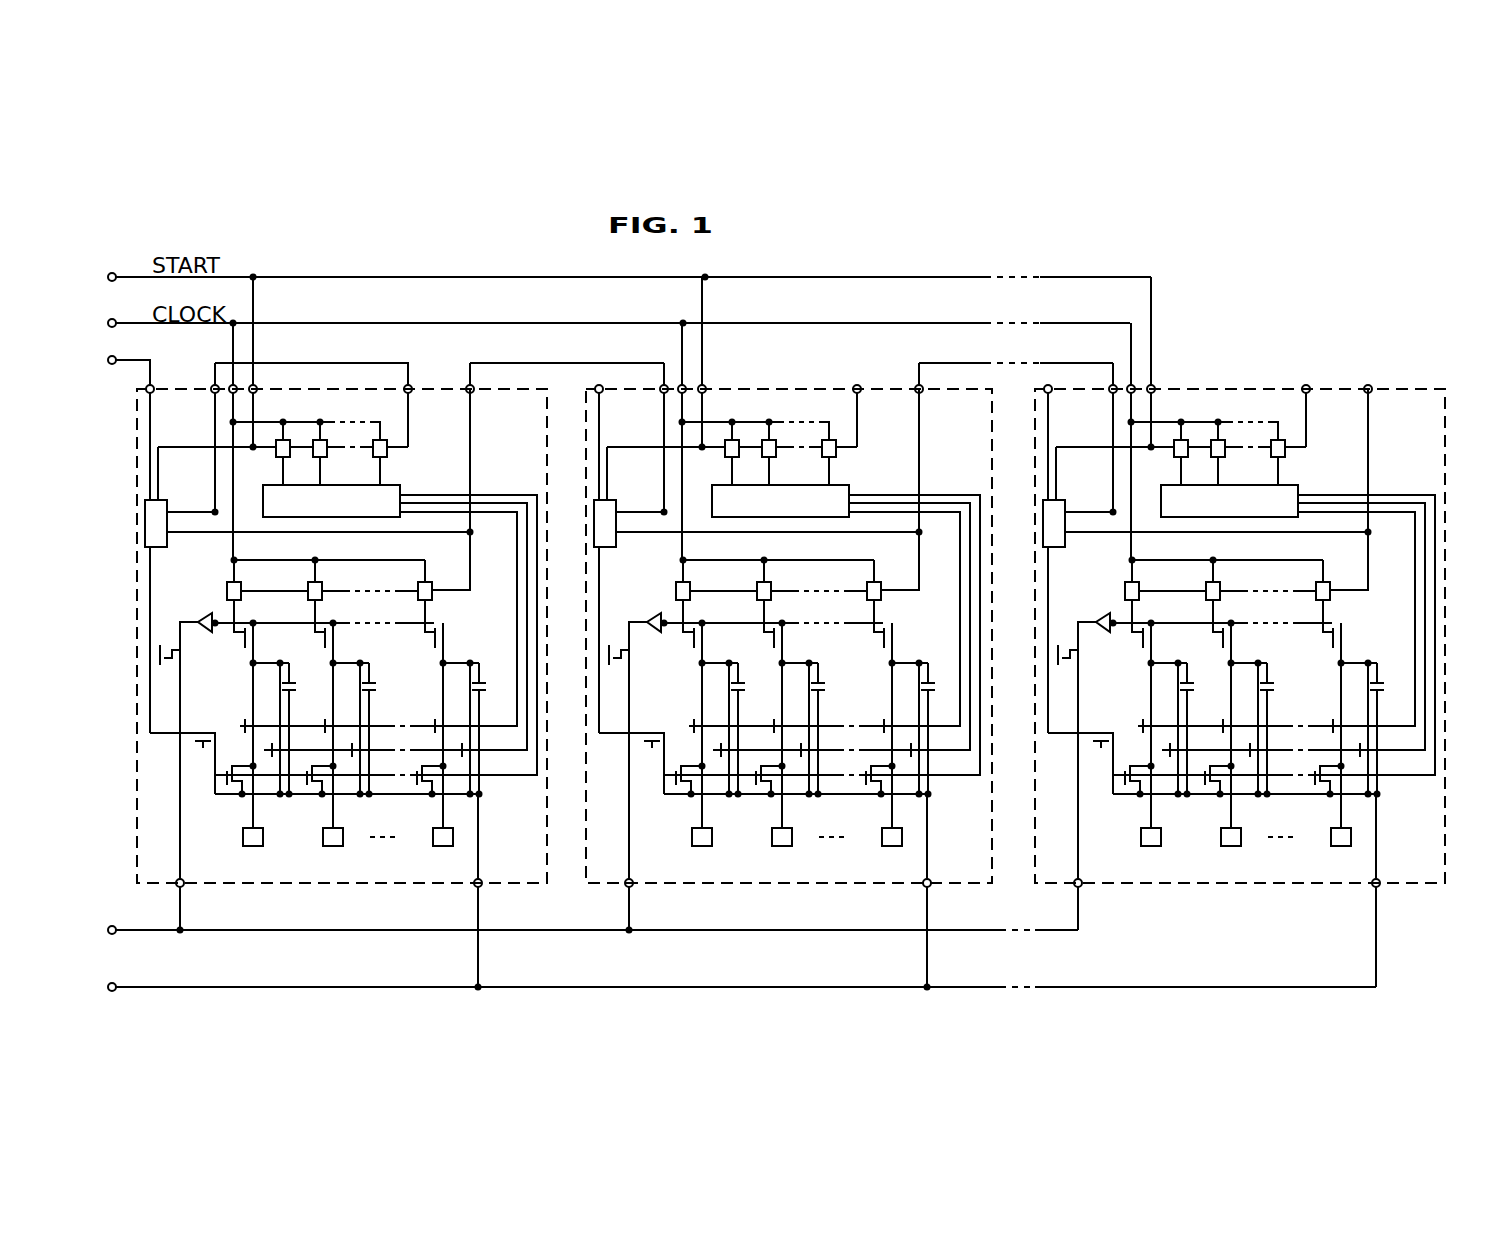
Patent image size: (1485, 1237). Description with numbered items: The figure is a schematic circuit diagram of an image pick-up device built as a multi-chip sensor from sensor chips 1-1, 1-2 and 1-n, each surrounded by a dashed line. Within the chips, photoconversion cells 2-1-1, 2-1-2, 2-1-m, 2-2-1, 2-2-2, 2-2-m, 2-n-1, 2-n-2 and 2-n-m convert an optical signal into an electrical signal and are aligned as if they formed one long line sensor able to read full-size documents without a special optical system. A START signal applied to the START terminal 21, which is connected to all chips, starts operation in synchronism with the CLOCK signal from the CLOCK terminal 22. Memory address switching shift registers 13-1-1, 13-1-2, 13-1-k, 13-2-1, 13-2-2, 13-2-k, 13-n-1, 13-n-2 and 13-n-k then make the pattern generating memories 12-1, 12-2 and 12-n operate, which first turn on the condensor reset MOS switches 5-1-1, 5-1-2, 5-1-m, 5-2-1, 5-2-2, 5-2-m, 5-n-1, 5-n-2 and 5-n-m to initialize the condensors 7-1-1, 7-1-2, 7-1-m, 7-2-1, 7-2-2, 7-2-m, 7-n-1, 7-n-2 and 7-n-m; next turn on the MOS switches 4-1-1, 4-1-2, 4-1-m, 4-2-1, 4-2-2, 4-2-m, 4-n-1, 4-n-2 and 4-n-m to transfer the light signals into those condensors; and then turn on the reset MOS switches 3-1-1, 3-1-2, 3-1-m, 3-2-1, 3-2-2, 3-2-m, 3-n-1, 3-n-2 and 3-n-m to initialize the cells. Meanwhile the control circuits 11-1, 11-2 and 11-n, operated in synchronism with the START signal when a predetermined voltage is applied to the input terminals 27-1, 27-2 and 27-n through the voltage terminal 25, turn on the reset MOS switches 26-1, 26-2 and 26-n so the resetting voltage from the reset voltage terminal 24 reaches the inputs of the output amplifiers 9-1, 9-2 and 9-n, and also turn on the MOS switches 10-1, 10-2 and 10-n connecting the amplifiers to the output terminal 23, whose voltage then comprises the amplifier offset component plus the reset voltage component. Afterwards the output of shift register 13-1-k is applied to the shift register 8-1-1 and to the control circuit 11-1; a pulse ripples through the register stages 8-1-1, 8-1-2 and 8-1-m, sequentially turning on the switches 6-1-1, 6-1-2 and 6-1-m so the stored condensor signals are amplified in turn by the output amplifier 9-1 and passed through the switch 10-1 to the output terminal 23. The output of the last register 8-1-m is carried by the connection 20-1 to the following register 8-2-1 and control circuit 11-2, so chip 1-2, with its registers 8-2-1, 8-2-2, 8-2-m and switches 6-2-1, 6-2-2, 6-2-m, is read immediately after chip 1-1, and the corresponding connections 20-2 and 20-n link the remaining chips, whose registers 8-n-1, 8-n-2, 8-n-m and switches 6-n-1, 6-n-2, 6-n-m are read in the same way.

The sensor chip 1-1 is at (296, 883).
The sensor chip 1-2 is at (789, 656).
The sensor chip 1-n is at (1240, 656).
The photoconversion cell 2-1-1 is at (253, 846).
The photoconversion cell 2-1-2 is at (333, 846).
The photoconversion cell 2-1-m is at (443, 846).
The photoconversion cell 2-2-1 is at (693, 824).
The photoconversion cell 2-2-2 is at (790, 824).
The photoconversion cell 2-2-m is at (886, 824).
The photoconversion cell 2-n-1 is at (1142, 824).
The photoconversion cell 2-n-2 is at (1239, 824).
The photoconversion cell 2-n-m is at (1335, 824).
The reset MOS switch 3-1-1 is at (234, 788).
The reset MOS switch 3-1-2 is at (318, 788).
The reset MOS switch 3-1-m is at (428, 788).
The reset MOS switch 3-2-1 is at (668, 793).
The reset MOS switch 3-2-2 is at (749, 794).
The reset MOS switch 3-2-m is at (851, 794).
The reset MOS switch 3-n-1 is at (1117, 793).
The reset MOS switch 3-n-2 is at (1198, 794).
The reset MOS switch 3-n-m is at (1300, 794).
The MOS switch 4-1-1 is at (244, 718).
The MOS switch 4-1-2 is at (324, 718).
The MOS switch 4-1-m is at (434, 718).
The MOS switch 4-2-1 is at (687, 704).
The MOS switch 4-2-2 is at (766, 704).
The MOS switch 4-2-m is at (869, 706).
The MOS switch 4-n-1 is at (1136, 704).
The MOS switch 4-n-2 is at (1215, 704).
The MOS switch 4-n-m is at (1318, 706).
The condensor reset MOS switch 5-1-1 is at (289, 698).
The condensor reset MOS switch 5-1-2 is at (355, 722).
The condensor reset MOS switch 5-1-m is at (485, 776).
The condensor reset MOS switch 5-2-1 is at (723, 727).
The condensor reset MOS switch 5-2-2 is at (803, 728).
The condensor reset MOS switch 5-2-m is at (927, 763).
The condensor reset MOS switch 5-n-1 is at (1172, 727).
The condensor reset MOS switch 5-n-2 is at (1252, 728).
The condensor reset MOS switch 5-n-m is at (1376, 763).
The switch 6-1-1 is at (247, 630).
The switch 6-1-2 is at (327, 630).
The switch 6-1-m is at (437, 630).
The switch 6-2-1 is at (727, 628).
The switch 6-2-2 is at (807, 628).
The switch 6-2-m is at (917, 628).
The switch 6-n-1 is at (1176, 628).
The switch 6-n-2 is at (1256, 628).
The switch 6-n-m is at (1366, 628).
The condensor 7-1-1 is at (296, 680).
The condensor 7-1-2 is at (378, 680).
The condensor 7-1-m is at (486, 680).
The condensor 7-2-1 is at (741, 712).
The condensor 7-2-2 is at (823, 712).
The condensor 7-2-m is at (934, 712).
The condensor 7-n-1 is at (1190, 712).
The condensor 7-n-2 is at (1272, 712).
The condensor 7-n-m is at (1383, 712).
The shift register 8-1-1 is at (241, 587).
The shift register 8-1-2 is at (322, 587).
The shift register 8-1-m is at (432, 582).
The shift register 8-2-1 is at (715, 596).
The shift register 8-2-2 is at (796, 596).
The shift register 8-2-m is at (891, 584).
The shift register 8-n-1 is at (1164, 596).
The shift register 8-n-2 is at (1245, 596).
The shift register 8-n-m is at (1340, 584).
The output amplifier 9-1 is at (212, 613).
The output amplifier 9-2 is at (639, 620).
The output amplifier 9-n is at (1088, 620).
The MOS switch 10-1 is at (162, 656).
The MOS switch 10-2 is at (614, 640).
The MOS switch 10-n is at (1063, 640).
The control circuit 11-1 is at (167, 538).
The control circuit 11-2 is at (632, 533).
The control circuit 11-n is at (1081, 533).
The pattern generating memory 12-1 is at (331, 503).
The pattern generating memory 12-2 is at (780, 503).
The pattern generating memory 12-n is at (1229, 503).
The memory address switching shift register 13-1-1 is at (283, 440).
The memory address switching shift register 13-1-2 is at (320, 440).
The memory address switching shift register 13-1-k is at (387, 452).
The memory address switching shift register 13-2-1 is at (743, 425).
The memory address switching shift register 13-2-2 is at (800, 439).
The memory address switching shift register 13-2-k is at (868, 462).
The memory address switching shift register 13-n-1 is at (1196, 425).
The memory address switching shift register 13-n-2 is at (1249, 439).
The memory address switching shift register 13-n-k is at (1317, 462).
The carry signal line 20-1 is at (473, 388).
The carry signal line 20-2 is at (930, 489).
The carry signal line 20-n is at (1377, 489).
The START terminal 21 is at (112, 273).
The CLOCK terminal 22 is at (112, 319).
The output terminal 23 is at (112, 934).
The reset voltage terminal 24 is at (112, 991).
The voltage terminal 25 is at (112, 364).
The reset MOS switch 26-1 is at (203, 741).
The reset MOS switch 26-2 is at (631, 732).
The reset MOS switch 26-n is at (1080, 732).
The input terminal 27-1 is at (150, 385).
The input terminal 27-2 is at (622, 362).
The input terminal 27-n is at (1071, 362).